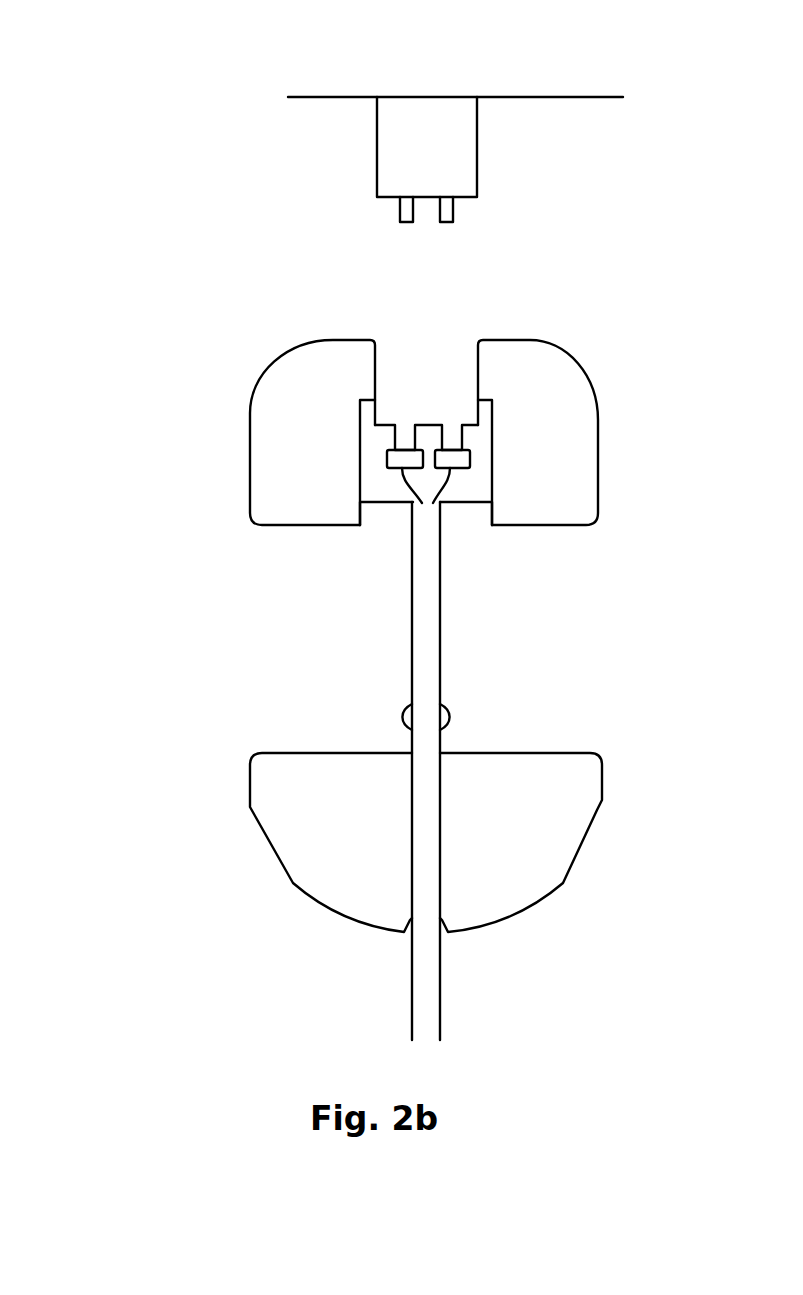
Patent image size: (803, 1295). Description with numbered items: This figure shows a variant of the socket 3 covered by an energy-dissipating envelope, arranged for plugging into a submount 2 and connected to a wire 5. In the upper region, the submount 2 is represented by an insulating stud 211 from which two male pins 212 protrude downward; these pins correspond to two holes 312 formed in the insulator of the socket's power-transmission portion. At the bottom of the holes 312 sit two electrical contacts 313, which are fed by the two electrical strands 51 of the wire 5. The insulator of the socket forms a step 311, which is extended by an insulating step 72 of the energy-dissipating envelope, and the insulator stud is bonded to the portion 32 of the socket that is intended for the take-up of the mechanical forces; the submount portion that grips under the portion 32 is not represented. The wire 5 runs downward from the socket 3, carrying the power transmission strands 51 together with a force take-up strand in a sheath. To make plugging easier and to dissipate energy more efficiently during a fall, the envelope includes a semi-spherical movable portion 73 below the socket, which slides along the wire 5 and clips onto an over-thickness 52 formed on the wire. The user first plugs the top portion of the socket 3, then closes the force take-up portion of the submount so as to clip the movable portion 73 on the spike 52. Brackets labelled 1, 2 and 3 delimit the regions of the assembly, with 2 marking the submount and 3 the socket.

The first section (connector region) 1 is at (122, 0).
The submount 2 is at (125, 103).
The socket 3 is at (97, 324).
The insulating stud 211 is at (477, 146).
The male pins 212 is at (453, 211).
The step of the energy-dissipating envelope 72 is at (478, 365).
The step 311 is at (485, 408).
The holes 312 is at (453, 443).
The electrical contacts 313 is at (397, 459).
The electrical strands 51 is at (420, 491).
The portion of the socket intended for the take-up of the mechanical forces 32 is at (400, 517).
The wire 5 is at (440, 628).
The over-thickness 52 is at (448, 717).
The semi-spherical movable portion 73 is at (527, 815).